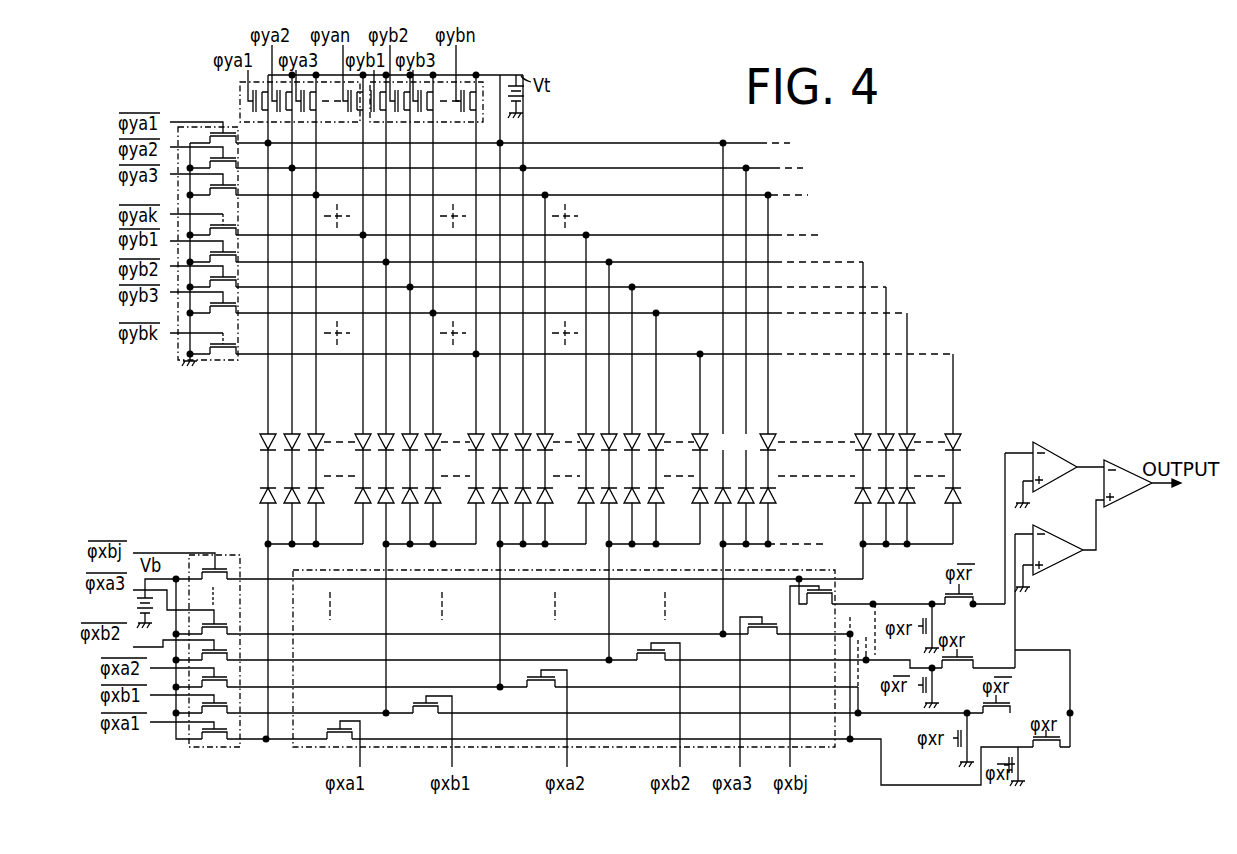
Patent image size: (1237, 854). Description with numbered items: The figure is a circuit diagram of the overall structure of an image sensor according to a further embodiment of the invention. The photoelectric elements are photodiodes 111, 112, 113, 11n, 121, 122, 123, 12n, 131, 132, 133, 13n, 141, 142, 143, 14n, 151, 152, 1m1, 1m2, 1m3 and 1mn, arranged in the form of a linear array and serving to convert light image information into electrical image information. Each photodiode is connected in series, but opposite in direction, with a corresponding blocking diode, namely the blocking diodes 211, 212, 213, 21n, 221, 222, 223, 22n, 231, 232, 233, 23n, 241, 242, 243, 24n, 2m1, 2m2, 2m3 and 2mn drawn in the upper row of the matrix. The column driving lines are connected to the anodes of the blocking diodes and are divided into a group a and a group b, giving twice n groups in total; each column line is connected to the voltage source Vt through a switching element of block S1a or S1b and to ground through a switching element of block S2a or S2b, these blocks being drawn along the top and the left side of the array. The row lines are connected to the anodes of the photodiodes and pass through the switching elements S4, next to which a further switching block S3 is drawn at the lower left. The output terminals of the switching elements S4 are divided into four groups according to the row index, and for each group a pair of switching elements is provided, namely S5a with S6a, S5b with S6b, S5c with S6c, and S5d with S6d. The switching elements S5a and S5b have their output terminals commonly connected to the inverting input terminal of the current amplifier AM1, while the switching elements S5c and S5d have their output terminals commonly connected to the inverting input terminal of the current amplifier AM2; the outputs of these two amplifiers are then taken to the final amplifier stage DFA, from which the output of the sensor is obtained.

The blocking diode 211 is at (259, 446).
The blocking diode 212 is at (284, 437).
The blocking diode 213 is at (316, 432).
The blocking diode 21n is at (359, 442).
The blocking diode 221 is at (406, 432).
The blocking diode 222 is at (420, 432).
The blocking diode 223 is at (436, 442).
The blocking diode 22n is at (473, 452).
The blocking diode 231 is at (512, 432).
The blocking diode 232 is at (527, 432).
The blocking diode 233 is at (548, 442).
The blocking diode 23n is at (584, 452).
The blocking diode 241 is at (617, 432).
The blocking diode 242 is at (640, 432).
The blocking diode 243 is at (659, 442).
The blocking diode 24n is at (698, 452).
The blocking diode 2m1 is at (858, 437).
The blocking diode 2m2 is at (892, 432).
The blocking diode 2m3 is at (908, 442).
The blocking diode 2mn is at (957, 442).
The photoelectric element 111 is at (260, 500).
The photoelectric element 112 is at (286, 504).
The photoelectric element 113 is at (313, 504).
The photoelectric element 11n is at (359, 503).
The photoelectric element 121 is at (386, 506).
The photoelectric element 122 is at (410, 506).
The photoelectric element 123 is at (431, 504).
The photoelectric element 12n is at (470, 503).
The photoelectric element 131 is at (500, 506).
The photoelectric element 132 is at (523, 506).
The photoelectric element 133 is at (545, 504).
The photoelectric element 13n is at (582, 503).
The photoelectric element 141 is at (609, 506).
The photoelectric element 142 is at (632, 506).
The photoelectric element 143 is at (656, 504).
The photoelectric element 14n is at (696, 503).
The photoelectric element 151 is at (722, 506).
The photoelectric element 152 is at (746, 506).
The photoelectric element 1m1 is at (860, 505).
The photoelectric element 1m2 is at (885, 506).
The photoelectric element 1m3 is at (906, 504).
The photoelectric element 1mn is at (954, 504).
The switching element S1a is at (240, 88).
The switching element S1b is at (477, 113).
The switching element S2a is at (214, 126).
The switching element S2b is at (183, 309).
The X bias switch group S3 is at (222, 748).
The switching elements S4 is at (290, 748).
The switching element S5a is at (1046, 748).
The switching element S5b is at (996, 714).
The switching element S5c is at (964, 657).
The switching element S5d is at (946, 591).
The switching element S6a is at (1014, 782).
The switching element S6b is at (958, 750).
The switching element S6c is at (941, 688).
The switching element S6d is at (941, 628).
The current amplifier AM1 is at (1058, 577).
The current amplifier AM2 is at (1056, 485).
The differential amplifier DFA is at (1126, 503).